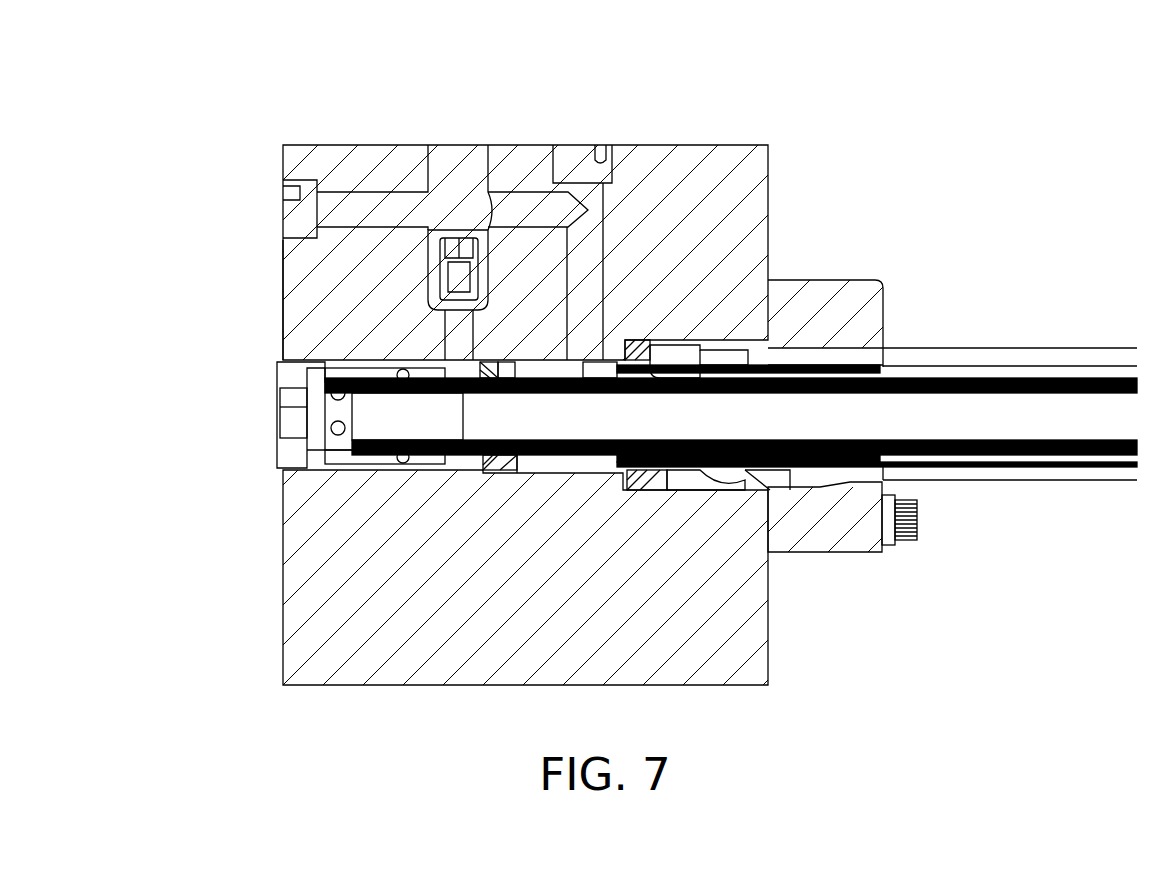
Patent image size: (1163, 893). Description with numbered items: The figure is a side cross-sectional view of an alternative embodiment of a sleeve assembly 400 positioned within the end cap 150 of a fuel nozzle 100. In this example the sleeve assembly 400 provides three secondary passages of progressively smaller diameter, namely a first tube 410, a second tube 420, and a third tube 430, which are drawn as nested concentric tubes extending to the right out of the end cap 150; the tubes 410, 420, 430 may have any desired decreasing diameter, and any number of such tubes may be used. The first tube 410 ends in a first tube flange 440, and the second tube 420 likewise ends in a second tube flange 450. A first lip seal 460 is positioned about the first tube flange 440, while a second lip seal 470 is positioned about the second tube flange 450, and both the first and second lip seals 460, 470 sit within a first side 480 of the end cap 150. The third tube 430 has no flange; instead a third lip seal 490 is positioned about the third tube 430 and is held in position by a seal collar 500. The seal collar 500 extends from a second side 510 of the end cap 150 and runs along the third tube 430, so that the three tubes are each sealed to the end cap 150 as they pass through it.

The fuel nozzle 100 is at (284, 81).
The end cap 150 is at (770, 158).
The sleeve assembly 400 is at (937, 335).
The first tube 410 is at (773, 363).
The second tube 420 is at (583, 377).
The third tube 430 is at (412, 394).
The first tube flange 440 is at (662, 356).
The second tube flange 450 is at (515, 370).
The first lip seal 460 is at (646, 343).
The second lip seal 470 is at (487, 362).
The first side 480 is at (770, 227).
The third lip seal 490 is at (394, 368).
The seal collar 500 is at (280, 372).
The second side 510 is at (282, 272).